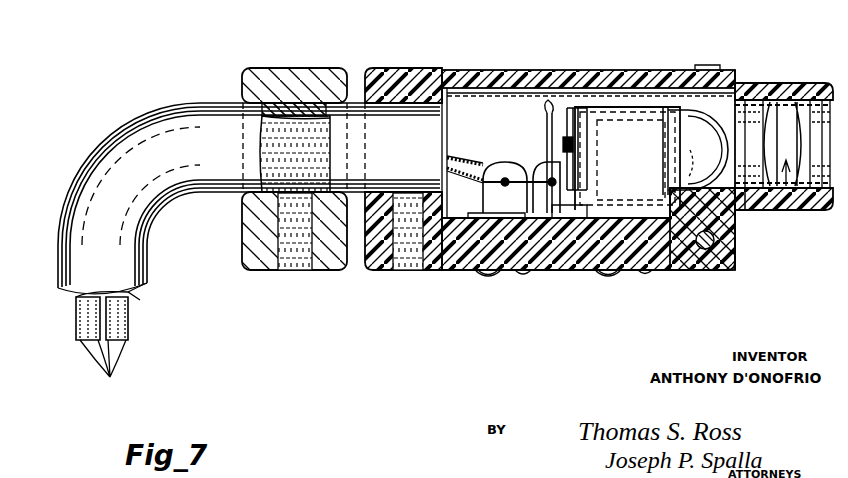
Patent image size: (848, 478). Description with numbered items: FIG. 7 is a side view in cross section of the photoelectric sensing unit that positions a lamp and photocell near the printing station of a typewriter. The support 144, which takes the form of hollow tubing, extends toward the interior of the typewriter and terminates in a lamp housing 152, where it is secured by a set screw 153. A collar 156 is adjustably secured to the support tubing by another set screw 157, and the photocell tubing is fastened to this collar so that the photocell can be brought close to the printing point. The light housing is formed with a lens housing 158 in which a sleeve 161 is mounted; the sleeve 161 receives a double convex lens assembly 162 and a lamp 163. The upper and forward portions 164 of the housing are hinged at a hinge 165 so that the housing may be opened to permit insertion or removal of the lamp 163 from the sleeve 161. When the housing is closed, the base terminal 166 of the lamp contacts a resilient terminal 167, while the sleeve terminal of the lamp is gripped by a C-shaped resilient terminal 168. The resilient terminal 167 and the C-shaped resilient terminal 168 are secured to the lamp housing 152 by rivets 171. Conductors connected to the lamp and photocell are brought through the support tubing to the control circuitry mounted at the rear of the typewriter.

The support 144 is at (134, 164).
The lamp housing 152 is at (412, 77).
The set screw 153 is at (393, 272).
The collar 156 is at (292, 77).
The set screw 157 is at (290, 272).
The lens housing 158 is at (765, 97).
The sleeve 161 is at (740, 212).
The double convex lens assembly 162 is at (802, 211).
The lamp 163 is at (695, 135).
The upper and forward portions of the housing 164 is at (493, 85).
The hinge 165 is at (702, 272).
The base terminal 166 is at (558, 132).
The resilient terminal 167 is at (545, 128).
The C-shaped resilient terminal 168 is at (595, 172).
The rivets 171 is at (490, 277).